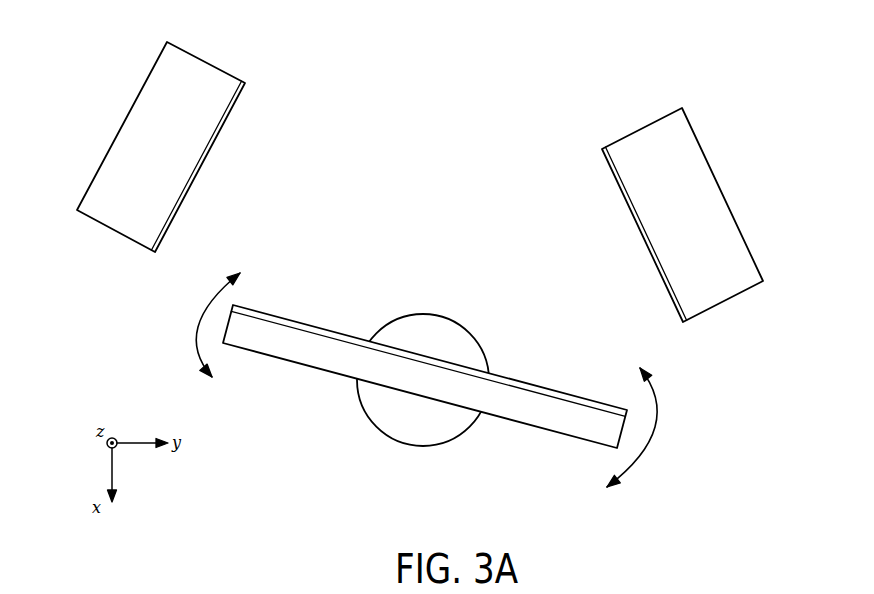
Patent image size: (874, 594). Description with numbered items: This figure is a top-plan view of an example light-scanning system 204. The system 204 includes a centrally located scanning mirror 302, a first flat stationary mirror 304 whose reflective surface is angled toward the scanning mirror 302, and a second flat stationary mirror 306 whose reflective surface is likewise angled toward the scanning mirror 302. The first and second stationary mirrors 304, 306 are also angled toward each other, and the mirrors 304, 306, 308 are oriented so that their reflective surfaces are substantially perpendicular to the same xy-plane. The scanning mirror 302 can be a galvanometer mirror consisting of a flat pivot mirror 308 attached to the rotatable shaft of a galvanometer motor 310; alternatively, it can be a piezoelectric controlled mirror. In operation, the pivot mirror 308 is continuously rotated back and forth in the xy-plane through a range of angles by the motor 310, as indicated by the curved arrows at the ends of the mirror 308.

The light-scanning system 204 is at (717, 93).
The scanning mirror 302 is at (335, 433).
The first flat stationary mirror 304 is at (118, 220).
The second flat stationary mirror 306 is at (727, 292).
The flat pivot mirror 308 is at (575, 438).
The galvanometer motor 310 is at (427, 313).